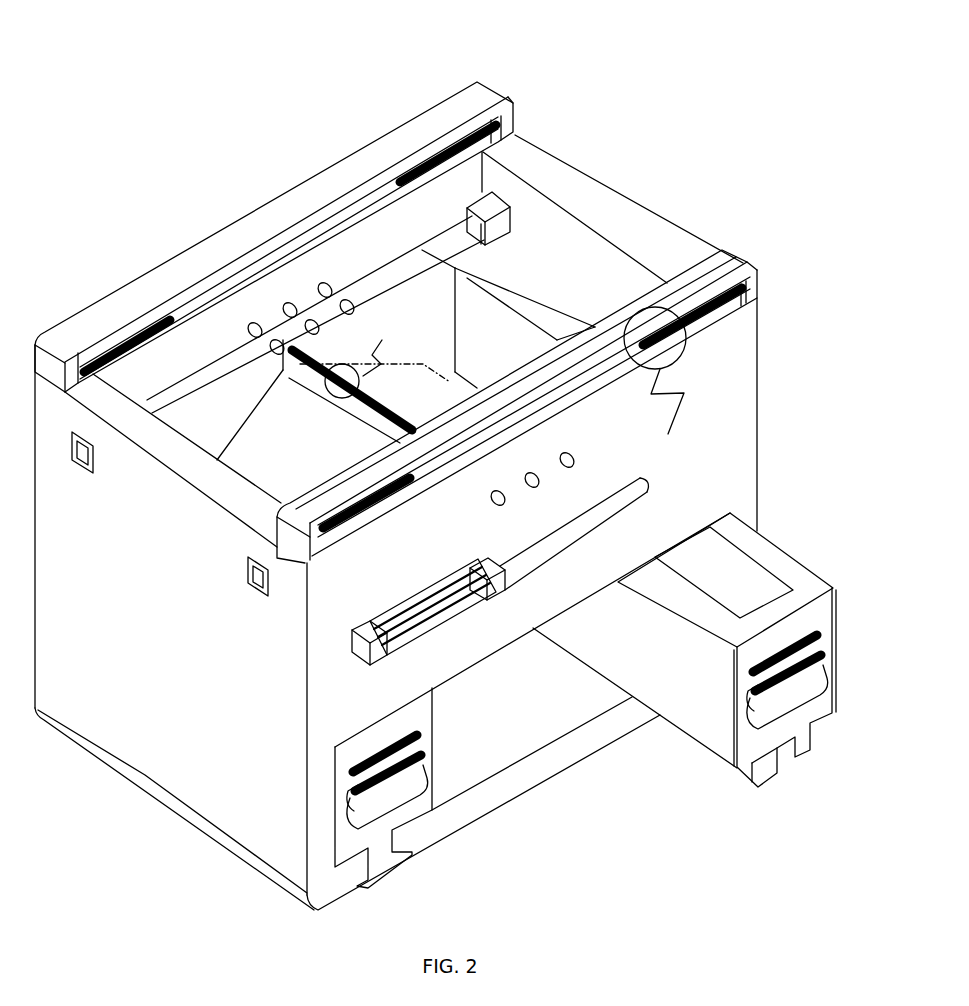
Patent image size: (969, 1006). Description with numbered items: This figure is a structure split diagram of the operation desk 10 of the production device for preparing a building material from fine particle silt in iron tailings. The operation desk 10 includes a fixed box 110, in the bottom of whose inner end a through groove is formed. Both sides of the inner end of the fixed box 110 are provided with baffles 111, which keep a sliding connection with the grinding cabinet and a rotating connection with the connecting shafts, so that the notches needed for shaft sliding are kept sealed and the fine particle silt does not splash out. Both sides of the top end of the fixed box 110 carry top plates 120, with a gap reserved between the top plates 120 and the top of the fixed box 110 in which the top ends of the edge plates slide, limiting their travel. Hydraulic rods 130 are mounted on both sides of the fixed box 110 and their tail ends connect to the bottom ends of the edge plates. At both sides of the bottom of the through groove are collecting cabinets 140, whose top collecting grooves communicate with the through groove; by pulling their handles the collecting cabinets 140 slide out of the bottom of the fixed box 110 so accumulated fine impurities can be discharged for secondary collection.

The operation desk 10 is at (462, 463).
The fixed box 110 is at (441, 522).
The baffle 111 is at (519, 180).
The top plate 120 is at (291, 204).
The hydraulic rod 130 is at (440, 571).
The collecting cabinet 140 is at (711, 646).